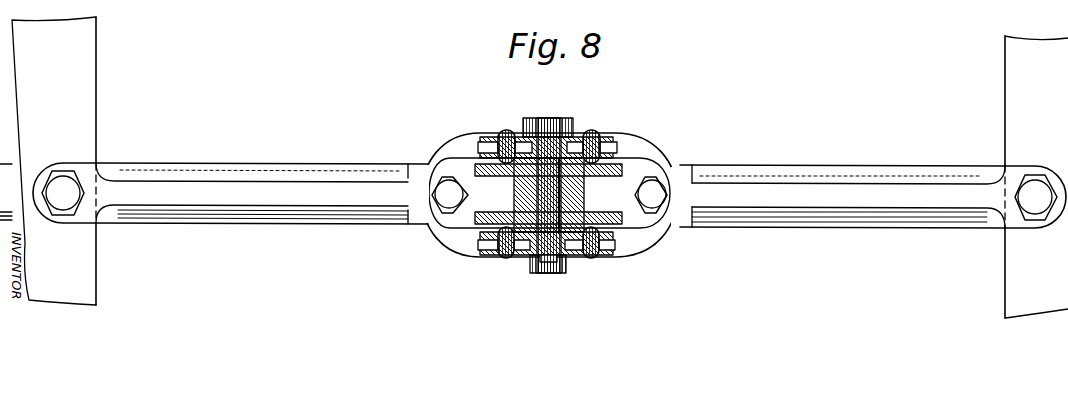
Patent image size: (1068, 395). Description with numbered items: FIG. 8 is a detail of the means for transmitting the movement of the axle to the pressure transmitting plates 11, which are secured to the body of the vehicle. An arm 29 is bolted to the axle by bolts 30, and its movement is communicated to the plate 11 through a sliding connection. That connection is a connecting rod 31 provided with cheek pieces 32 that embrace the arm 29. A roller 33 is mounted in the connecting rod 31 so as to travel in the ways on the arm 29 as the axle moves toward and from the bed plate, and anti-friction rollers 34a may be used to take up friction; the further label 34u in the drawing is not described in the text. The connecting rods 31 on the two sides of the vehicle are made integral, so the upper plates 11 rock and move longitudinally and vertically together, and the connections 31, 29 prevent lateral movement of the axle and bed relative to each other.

The pressure transmitting plate 11 is at (82, 73).
The arm 29 is at (580, 190).
The bolts 30 is at (443, 197).
The connecting rod 31 is at (282, 193).
The cheek pieces 32 is at (552, 160).
The roller 33 is at (549, 263).
The anti-friction rollers 34a is at (506, 130).
The locking bolt 34u is at (592, 259).